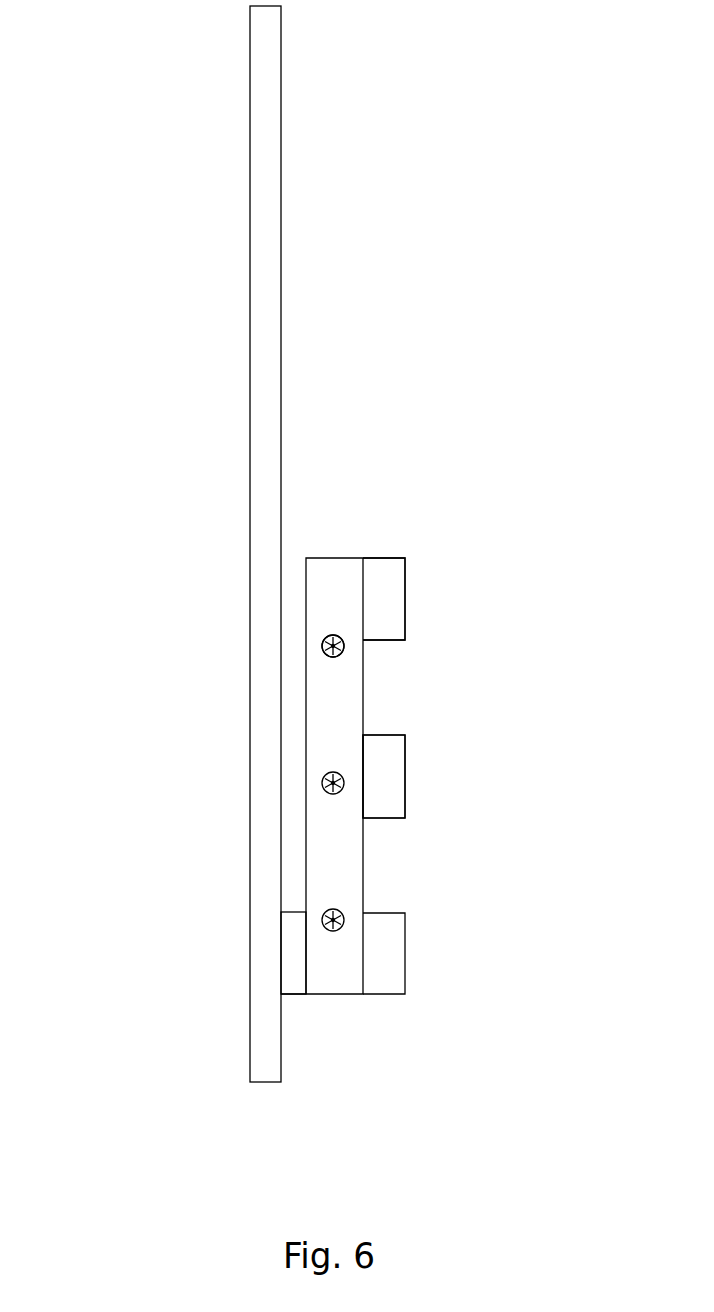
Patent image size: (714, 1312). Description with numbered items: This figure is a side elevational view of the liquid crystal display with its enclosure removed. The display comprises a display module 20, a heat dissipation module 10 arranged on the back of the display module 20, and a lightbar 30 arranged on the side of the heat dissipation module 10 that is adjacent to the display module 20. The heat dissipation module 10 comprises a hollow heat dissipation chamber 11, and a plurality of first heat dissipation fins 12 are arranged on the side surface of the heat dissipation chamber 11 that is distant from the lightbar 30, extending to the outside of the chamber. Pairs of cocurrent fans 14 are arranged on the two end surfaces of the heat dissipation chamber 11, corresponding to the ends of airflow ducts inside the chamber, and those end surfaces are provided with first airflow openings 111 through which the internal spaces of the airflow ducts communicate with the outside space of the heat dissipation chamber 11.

The display module 20 is at (262, 197).
The lightbar 30 is at (292, 940).
The heat dissipation module 10 is at (397, 1015).
The first heat dissipation fins 12 is at (383, 602).
The heat dissipation chamber 11 is at (358, 792).
The cocurrent fans 14 is at (334, 635).
The first airflow openings 111 is at (332, 635).